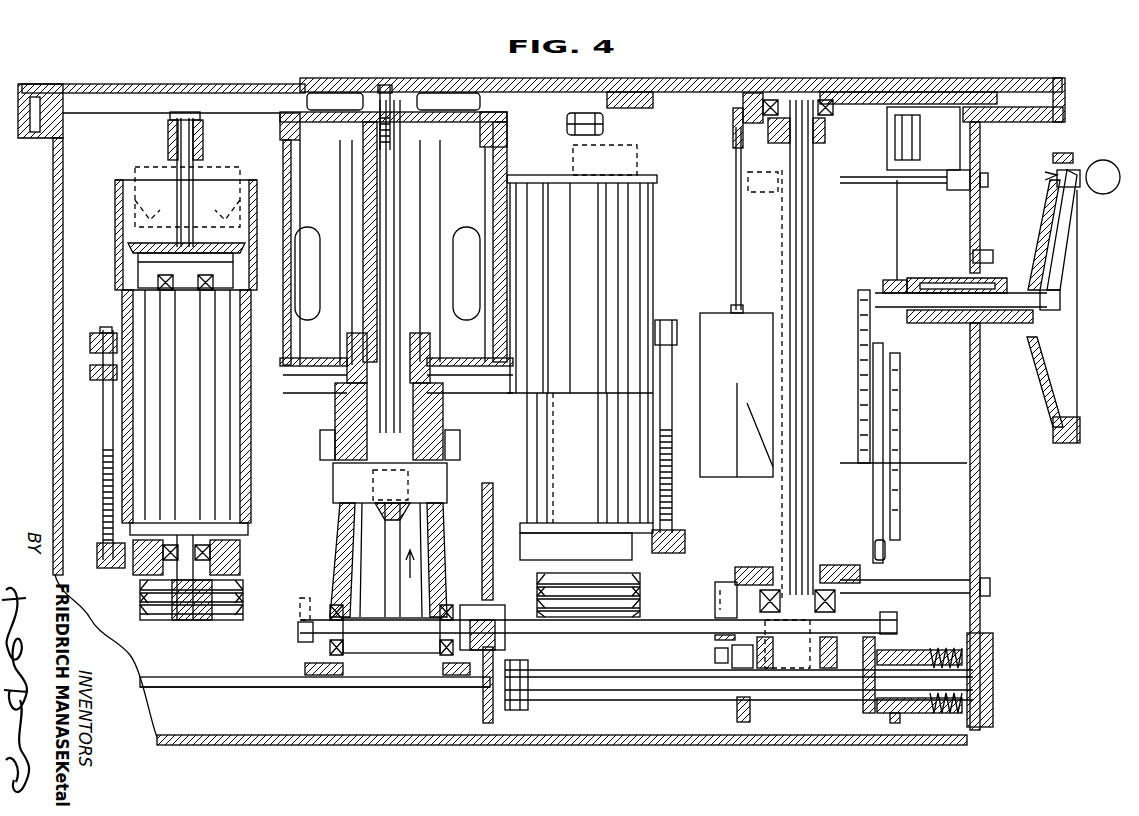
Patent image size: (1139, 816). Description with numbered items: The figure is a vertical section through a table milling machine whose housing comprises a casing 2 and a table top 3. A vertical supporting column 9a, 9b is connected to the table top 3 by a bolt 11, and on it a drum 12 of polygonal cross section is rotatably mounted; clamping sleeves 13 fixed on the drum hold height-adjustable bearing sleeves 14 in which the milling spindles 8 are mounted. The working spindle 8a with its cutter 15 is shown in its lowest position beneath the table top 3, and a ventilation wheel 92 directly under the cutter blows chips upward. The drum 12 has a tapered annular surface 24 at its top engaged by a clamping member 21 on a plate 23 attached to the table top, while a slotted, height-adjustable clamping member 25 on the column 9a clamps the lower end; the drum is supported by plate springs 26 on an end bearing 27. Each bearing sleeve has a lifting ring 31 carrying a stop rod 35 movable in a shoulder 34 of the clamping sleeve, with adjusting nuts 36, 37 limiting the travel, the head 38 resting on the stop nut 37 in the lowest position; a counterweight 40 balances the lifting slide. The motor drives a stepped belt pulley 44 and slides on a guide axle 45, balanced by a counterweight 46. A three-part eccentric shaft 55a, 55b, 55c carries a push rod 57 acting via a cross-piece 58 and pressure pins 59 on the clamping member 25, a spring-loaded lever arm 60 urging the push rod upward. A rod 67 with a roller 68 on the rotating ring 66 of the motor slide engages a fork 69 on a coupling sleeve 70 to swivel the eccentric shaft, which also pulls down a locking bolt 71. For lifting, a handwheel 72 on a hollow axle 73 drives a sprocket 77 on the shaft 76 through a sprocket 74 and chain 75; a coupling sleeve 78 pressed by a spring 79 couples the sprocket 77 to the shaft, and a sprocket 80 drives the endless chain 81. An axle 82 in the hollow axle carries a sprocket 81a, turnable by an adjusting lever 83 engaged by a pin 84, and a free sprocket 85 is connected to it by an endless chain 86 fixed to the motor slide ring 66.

The casing 2 is at (53, 270).
The table top 3 is at (205, 82).
The milling spindles 8 is at (170, 160).
The milling spindle in working position 8a is at (205, 135).
The supporting column 9a is at (437, 552).
The supporting column 9b is at (408, 222).
The bolt 11 is at (388, 84).
The drum 12 is at (500, 226).
The clamping sleeve 13 is at (115, 203).
The bearing sleeve 14 is at (160, 454).
The cutter 15 is at (145, 180).
The clamping member 21 is at (285, 152).
The plate 23 is at (440, 122).
The tapered annular surface 24 is at (495, 140).
The clamping member 25 is at (443, 414).
The plate springs 26 is at (416, 334).
The end bearing 27 is at (428, 346).
The lifting ring 31 is at (665, 570).
The shoulder 34 is at (92, 352).
The stop rod 35 is at (108, 428).
The adjusting nut 36 is at (97, 545).
The stop nut 37 is at (92, 375).
The head of stop rod 38 is at (106, 328).
The counterweight 40 is at (706, 313).
The stepped belt pulley 44 is at (212, 620).
The guide axle 45 is at (805, 241).
The counterweight 46 is at (982, 425).
The eccentric shaft portion 55a is at (363, 640).
The eccentric shaft portion 55b is at (577, 625).
The eccentric shaft portion 55c is at (870, 622).
The push rod 57 is at (385, 545).
The cross-piece 58 is at (345, 488).
The pressure pins 59 is at (332, 440).
The lever arm 60 is at (302, 604).
The rotating ring 66 is at (737, 572).
The rod 67 is at (745, 668).
The roller 68 is at (715, 657).
The fork 69 is at (716, 600).
The coupling sleeve 70 is at (715, 638).
The locking bolt 71 is at (885, 556).
The handwheel 72 is at (1070, 381).
The hollow axle 73 is at (968, 275).
The sprocket 74 is at (892, 282).
The chain 75 is at (897, 428).
The shaft 76 is at (627, 690).
The sprocket 77 is at (893, 723).
The coupling sleeve 78 is at (925, 710).
The spring 79 is at (955, 648).
The sprocket 80 is at (483, 688).
The endless chain 81 is at (482, 512).
The sprocket 81a is at (862, 292).
The axle 82 is at (935, 295).
The adjusting lever 83 is at (1068, 230).
The pin 84 is at (1050, 174).
The sprocket 85 is at (868, 715).
The endless chain 86 is at (870, 346).
The ventilation wheel 92 is at (145, 248).